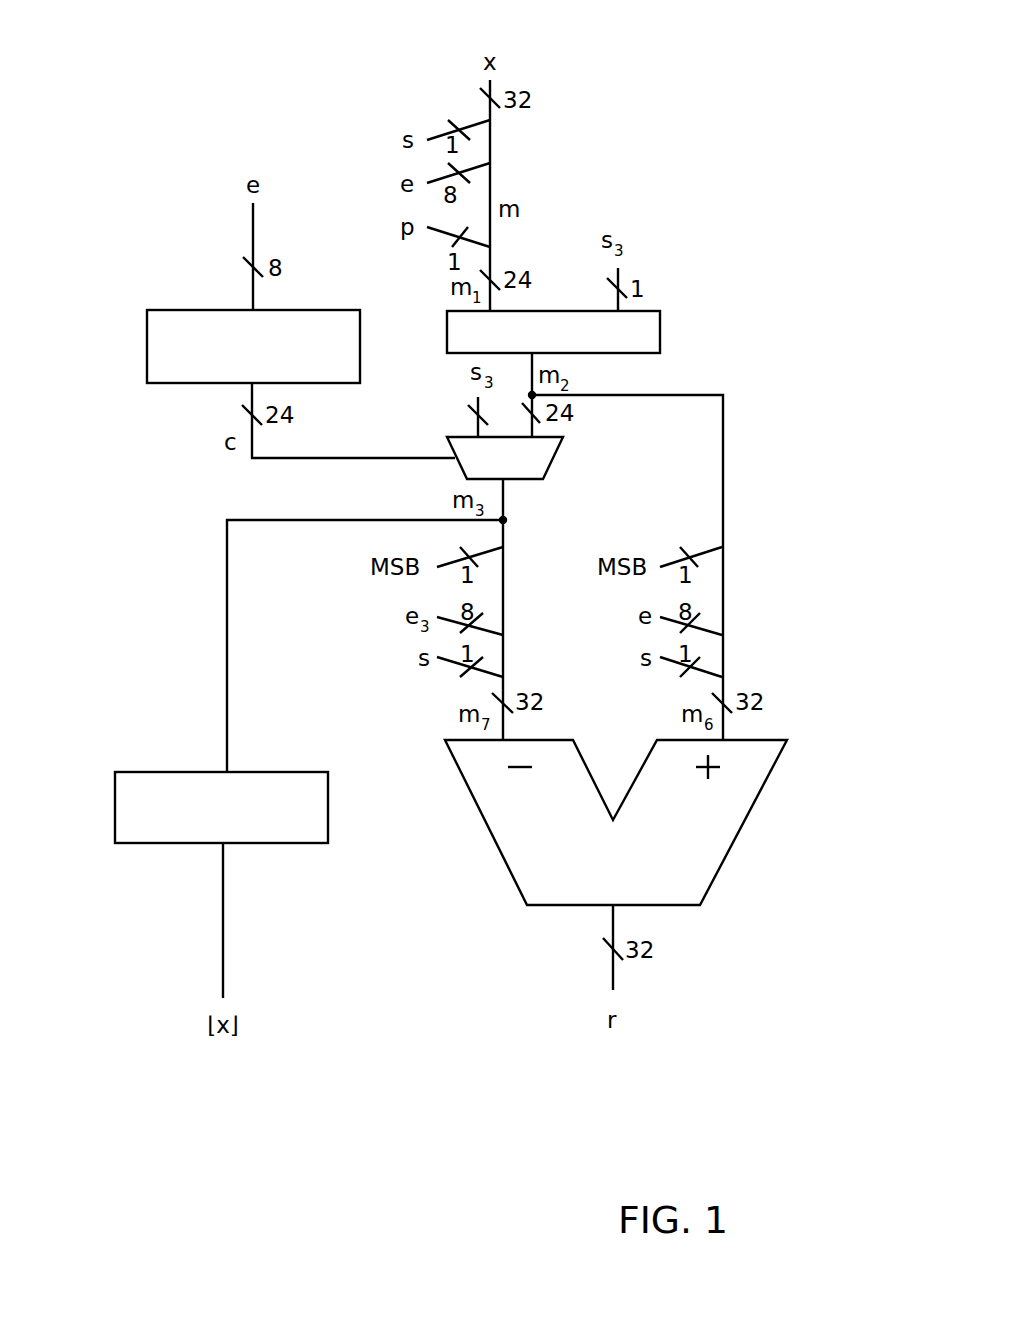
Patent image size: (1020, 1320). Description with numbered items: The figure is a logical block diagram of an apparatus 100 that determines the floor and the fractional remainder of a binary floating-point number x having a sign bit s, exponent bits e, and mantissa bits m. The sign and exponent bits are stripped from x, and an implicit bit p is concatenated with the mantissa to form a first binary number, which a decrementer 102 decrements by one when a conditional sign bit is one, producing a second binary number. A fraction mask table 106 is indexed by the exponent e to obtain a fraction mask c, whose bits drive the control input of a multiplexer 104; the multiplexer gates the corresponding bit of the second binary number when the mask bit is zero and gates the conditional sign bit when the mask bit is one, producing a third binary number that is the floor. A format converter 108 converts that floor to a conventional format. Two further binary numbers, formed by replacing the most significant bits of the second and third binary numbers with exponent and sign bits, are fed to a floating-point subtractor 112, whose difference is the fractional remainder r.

The apparatus 100 is at (686, 72).
The decrementer 102 is at (660, 332).
The multiplexer 104 is at (556, 456).
The fraction mask table 106 is at (147, 335).
The format converter 108 is at (115, 820).
The floating-point subtractor 112 is at (733, 843).